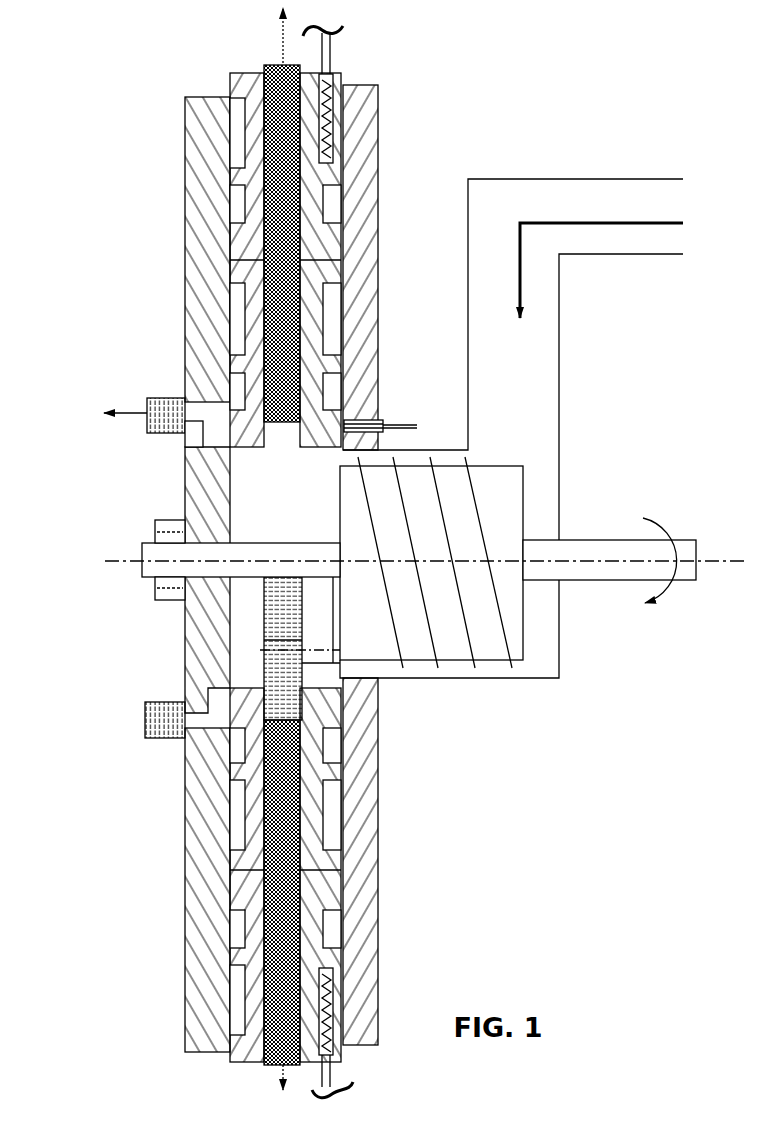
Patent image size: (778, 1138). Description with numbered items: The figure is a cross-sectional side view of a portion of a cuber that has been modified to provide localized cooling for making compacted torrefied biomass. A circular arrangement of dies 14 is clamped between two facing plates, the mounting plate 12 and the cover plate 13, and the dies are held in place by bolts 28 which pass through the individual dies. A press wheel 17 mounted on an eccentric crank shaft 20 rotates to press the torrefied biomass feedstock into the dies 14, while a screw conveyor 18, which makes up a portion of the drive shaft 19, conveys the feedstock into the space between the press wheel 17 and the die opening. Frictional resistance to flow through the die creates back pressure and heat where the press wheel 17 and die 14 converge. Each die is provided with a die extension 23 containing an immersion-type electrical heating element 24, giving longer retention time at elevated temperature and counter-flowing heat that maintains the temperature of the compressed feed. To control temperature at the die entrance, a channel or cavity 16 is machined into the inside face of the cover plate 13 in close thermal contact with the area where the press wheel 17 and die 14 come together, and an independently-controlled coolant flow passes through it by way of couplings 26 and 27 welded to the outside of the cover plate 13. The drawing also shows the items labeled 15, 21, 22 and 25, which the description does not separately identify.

The facing plate (mounting plate) 12 is at (380, 804).
The cover plate 13 is at (185, 894).
The die 14 is at (342, 866).
The seal element 15 is at (142, 399).
The cavity (coolant channel) 16 is at (195, 450).
The press wheel 17 is at (262, 586).
The screw conveyor 18 is at (523, 662).
The drive shaft 19 is at (590, 583).
The eccentric crank shaft 20 is at (340, 665).
The bearing 21 is at (154, 520).
The fluid conduit 22 is at (685, 218).
The die extension 23 is at (229, 969).
The immersion-type electrical heating element 24 is at (338, 118).
The shaft 25 is at (274, 70).
The coupling 26 is at (143, 720).
The coupling 27 is at (82, 396).
The bolt 28 is at (403, 420).